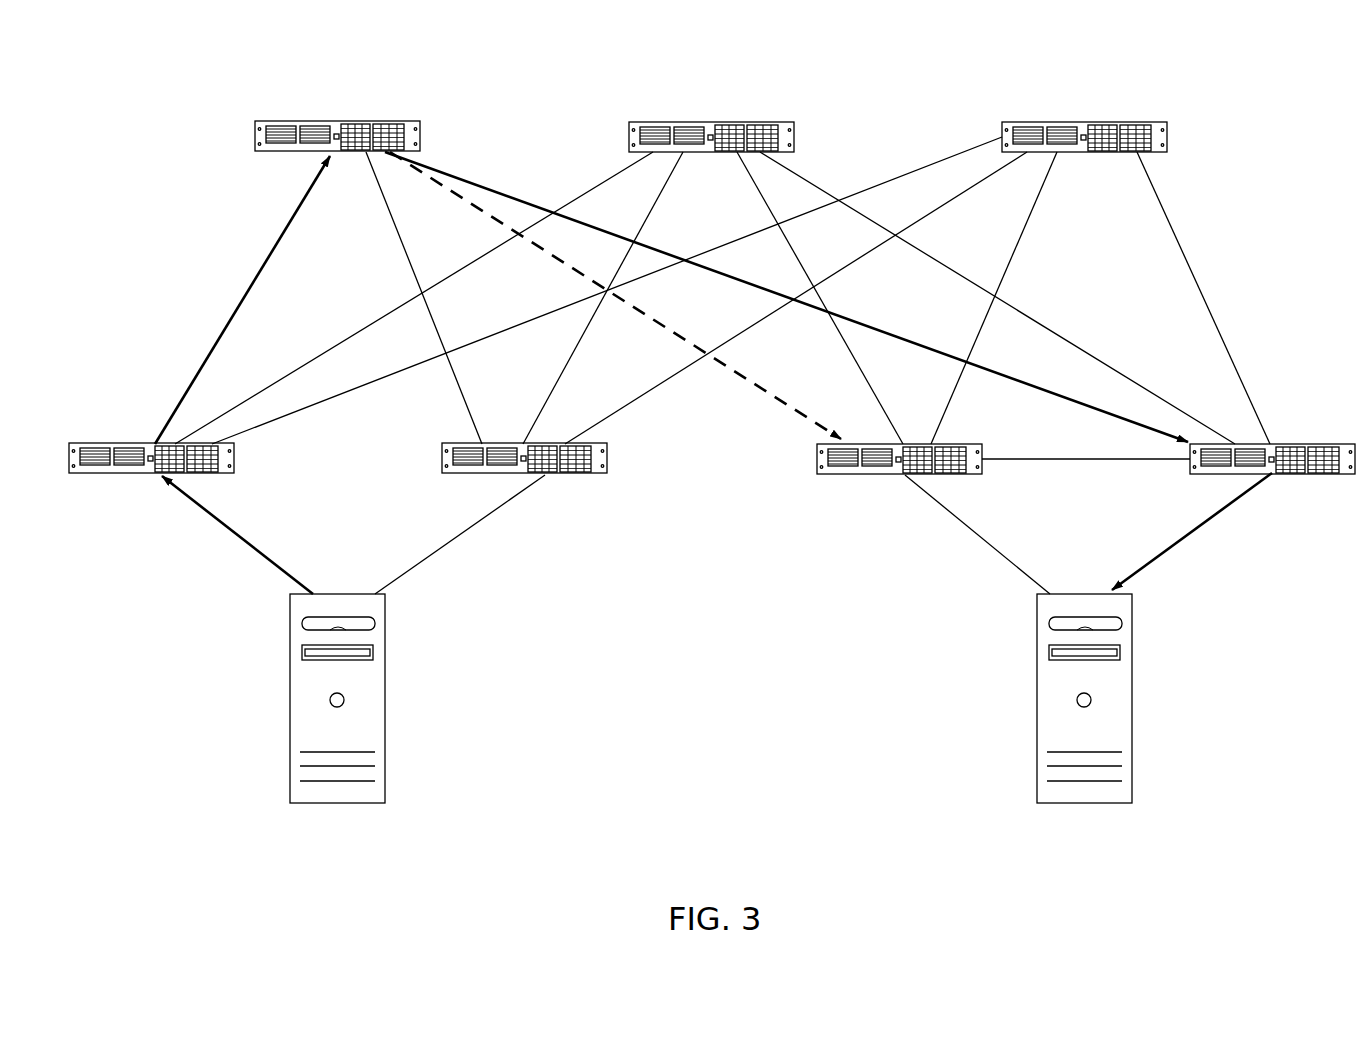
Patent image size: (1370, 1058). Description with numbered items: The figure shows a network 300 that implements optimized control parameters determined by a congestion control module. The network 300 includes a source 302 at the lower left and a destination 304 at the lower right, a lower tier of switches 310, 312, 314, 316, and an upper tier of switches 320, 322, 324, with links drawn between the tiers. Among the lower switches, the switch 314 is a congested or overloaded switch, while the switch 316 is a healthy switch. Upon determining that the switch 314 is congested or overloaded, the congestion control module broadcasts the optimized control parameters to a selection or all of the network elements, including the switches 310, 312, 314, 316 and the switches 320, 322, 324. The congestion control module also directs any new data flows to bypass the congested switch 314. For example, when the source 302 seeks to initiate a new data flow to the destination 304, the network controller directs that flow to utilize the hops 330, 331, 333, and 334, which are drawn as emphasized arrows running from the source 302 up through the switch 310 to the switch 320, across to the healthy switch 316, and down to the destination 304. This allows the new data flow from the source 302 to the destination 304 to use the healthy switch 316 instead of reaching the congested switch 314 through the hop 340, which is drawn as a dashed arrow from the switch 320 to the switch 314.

The network 300 is at (1268, 75).
The source 302 is at (385, 722).
The destination 304 is at (1132, 722).
The switch 310 is at (105, 475).
The switch 312 is at (575, 474).
The congested or overloaded switch 314 is at (830, 476).
The healthy switch 316 is at (1205, 475).
The switch 320 is at (395, 121).
The switch 322 is at (765, 122).
The switch 324 is at (1135, 122).
The hop 330 is at (265, 562).
The hop 331 is at (243, 296).
The hop 333 is at (900, 335).
The hop 334 is at (1178, 542).
The hop 340 is at (770, 395).